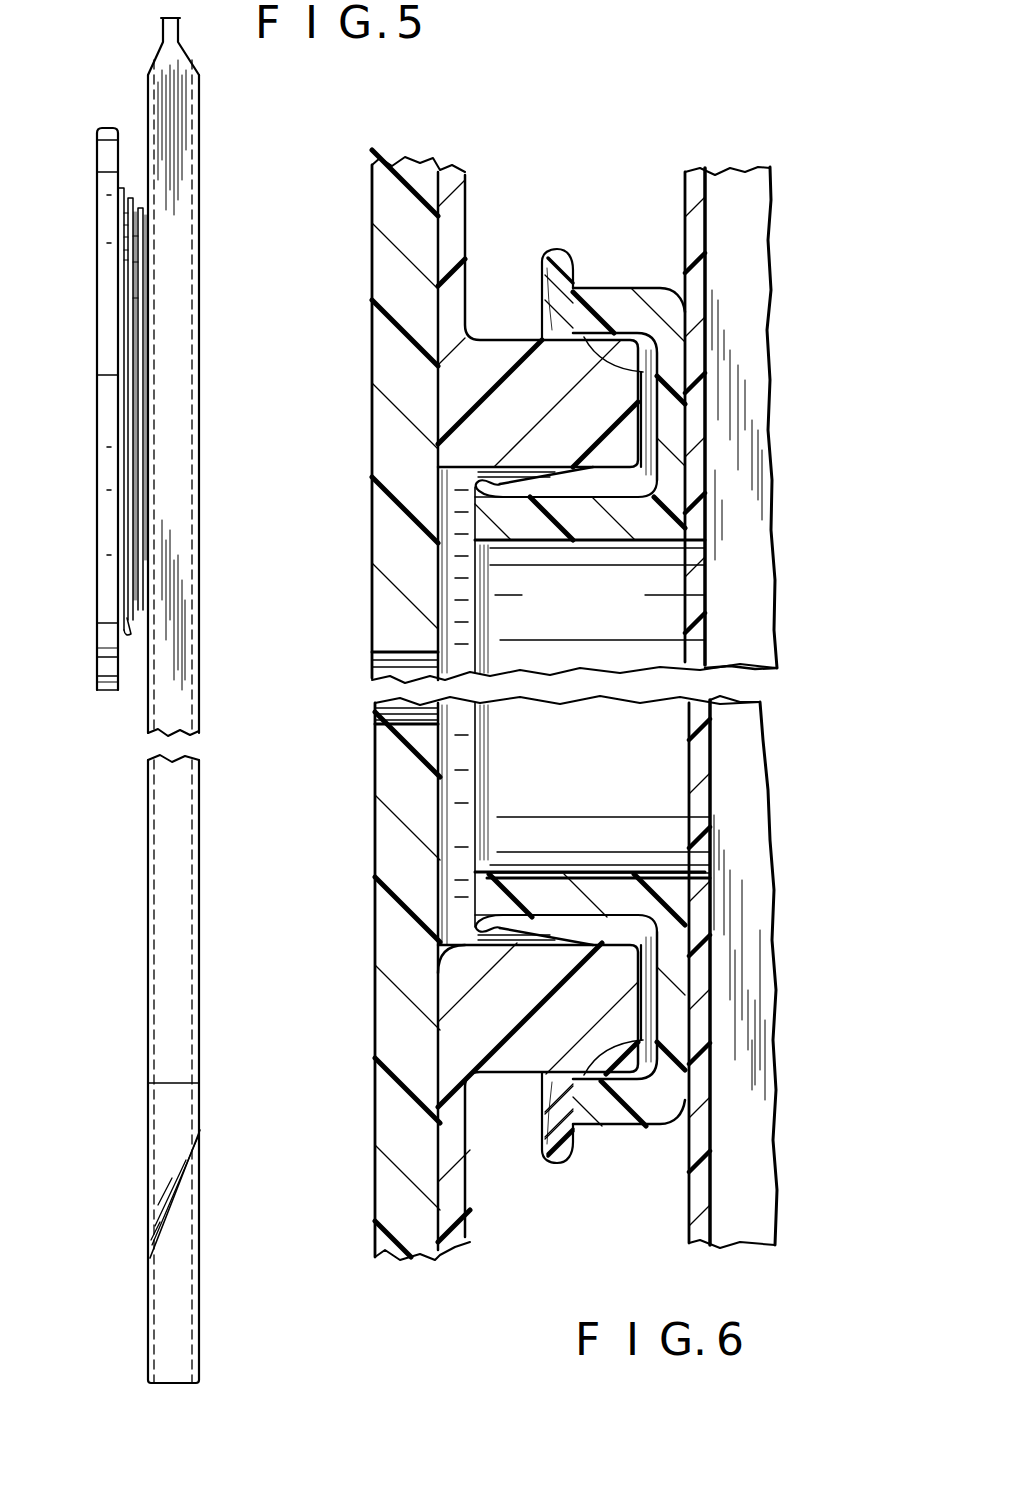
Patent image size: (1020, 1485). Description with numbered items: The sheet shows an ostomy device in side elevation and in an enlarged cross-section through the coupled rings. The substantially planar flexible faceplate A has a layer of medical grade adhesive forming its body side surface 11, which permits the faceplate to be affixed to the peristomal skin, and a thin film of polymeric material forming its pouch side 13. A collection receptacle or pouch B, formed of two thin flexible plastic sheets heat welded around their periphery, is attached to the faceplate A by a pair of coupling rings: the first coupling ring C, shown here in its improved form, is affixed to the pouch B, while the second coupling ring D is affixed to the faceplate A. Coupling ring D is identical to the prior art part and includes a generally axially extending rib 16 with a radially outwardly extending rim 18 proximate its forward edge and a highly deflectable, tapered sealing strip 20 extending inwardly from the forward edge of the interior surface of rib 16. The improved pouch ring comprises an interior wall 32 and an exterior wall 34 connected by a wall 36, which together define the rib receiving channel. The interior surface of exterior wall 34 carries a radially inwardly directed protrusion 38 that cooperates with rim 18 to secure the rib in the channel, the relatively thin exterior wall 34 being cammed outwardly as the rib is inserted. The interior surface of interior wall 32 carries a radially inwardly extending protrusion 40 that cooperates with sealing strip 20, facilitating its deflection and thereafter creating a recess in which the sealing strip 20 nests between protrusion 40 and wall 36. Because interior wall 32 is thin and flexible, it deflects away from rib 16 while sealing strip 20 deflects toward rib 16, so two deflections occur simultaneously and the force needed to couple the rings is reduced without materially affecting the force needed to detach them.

In FIG. 5, the faceplate A is at (98, 128).
In FIG. 6, the faceplate A is at (372, 300).
In FIG. 5, the pouch B is at (200, 180).
In FIG. 6, the pouch B is at (770, 312).
In FIG. 5, the second coupling ring D is at (120, 298).
In FIG. 5, the body side surface 11 is at (97, 648).
In FIG. 5, the pouch side 13 is at (120, 674).
In FIG. 6, the rib 16 is at (527, 397).
In FIG. 6, the rim 18 is at (672, 293).
In FIG. 6, the sealing strip 20 is at (577, 483).
In FIG. 6, the interior wall 32 is at (612, 520).
In FIG. 6, the exterior wall 34 is at (602, 313).
In FIG. 6, the connecting wall 36 is at (668, 426).
In FIG. 6, the protrusion 38 is at (643, 372).
In FIG. 6, the protrusion 40 is at (484, 490).
In FIG. 6, the first coupling ring C is at (627, 873).